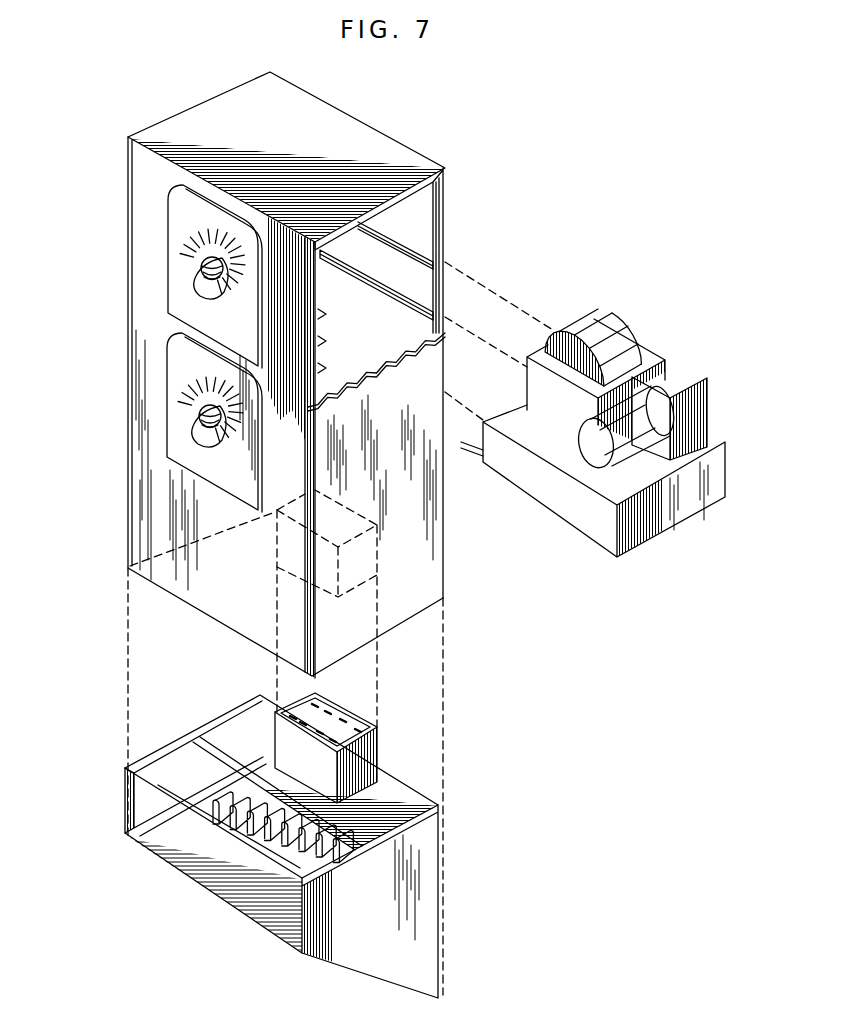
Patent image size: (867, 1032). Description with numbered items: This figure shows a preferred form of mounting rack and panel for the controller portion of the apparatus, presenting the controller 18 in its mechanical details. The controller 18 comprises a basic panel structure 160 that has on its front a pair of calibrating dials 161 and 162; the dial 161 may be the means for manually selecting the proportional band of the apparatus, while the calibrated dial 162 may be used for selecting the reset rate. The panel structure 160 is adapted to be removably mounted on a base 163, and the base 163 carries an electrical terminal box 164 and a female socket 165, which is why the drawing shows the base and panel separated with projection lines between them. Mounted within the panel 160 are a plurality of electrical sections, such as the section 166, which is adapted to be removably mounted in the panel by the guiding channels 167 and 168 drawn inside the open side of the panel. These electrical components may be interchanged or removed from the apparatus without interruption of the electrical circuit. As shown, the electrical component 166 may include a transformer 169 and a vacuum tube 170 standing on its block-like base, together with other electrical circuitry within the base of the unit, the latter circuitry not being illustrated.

The controller 18 is at (476, 222).
The panel structure 160 is at (152, 188).
The calibrating dial 161 is at (200, 218).
The calibrated dial 162 is at (190, 368).
The base 163 is at (426, 898).
The electrical terminal box 164 is at (258, 845).
The female socket 165 is at (340, 730).
The electrical section 166 is at (698, 500).
The guiding channel 167 is at (430, 252).
The guiding channel 168 is at (322, 312).
The transformer 169 is at (620, 337).
The vacuum tube 170 is at (594, 457).